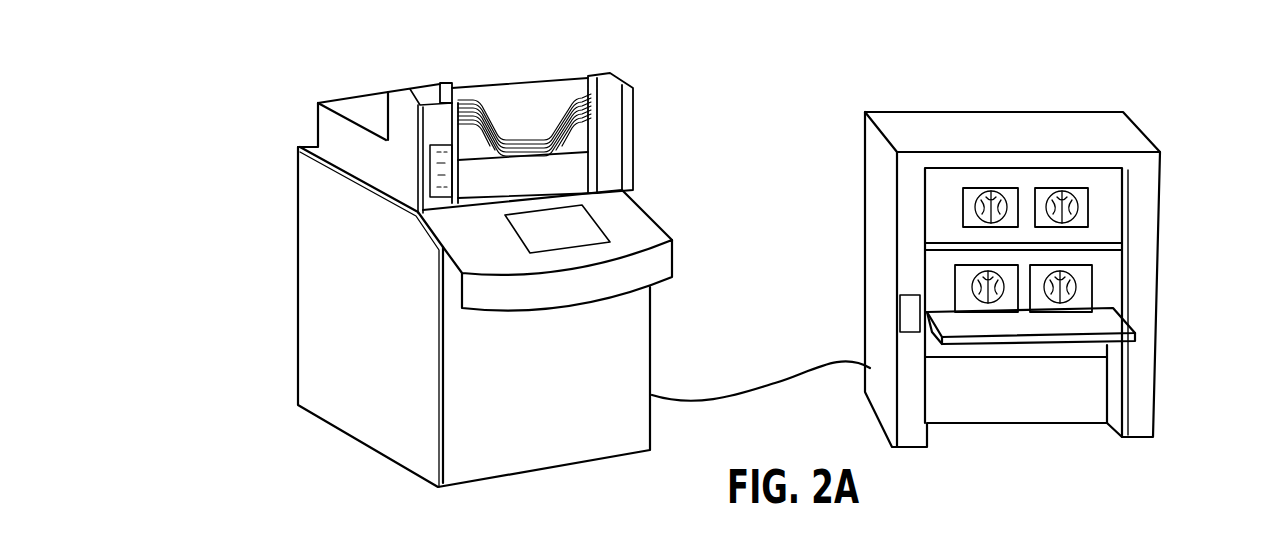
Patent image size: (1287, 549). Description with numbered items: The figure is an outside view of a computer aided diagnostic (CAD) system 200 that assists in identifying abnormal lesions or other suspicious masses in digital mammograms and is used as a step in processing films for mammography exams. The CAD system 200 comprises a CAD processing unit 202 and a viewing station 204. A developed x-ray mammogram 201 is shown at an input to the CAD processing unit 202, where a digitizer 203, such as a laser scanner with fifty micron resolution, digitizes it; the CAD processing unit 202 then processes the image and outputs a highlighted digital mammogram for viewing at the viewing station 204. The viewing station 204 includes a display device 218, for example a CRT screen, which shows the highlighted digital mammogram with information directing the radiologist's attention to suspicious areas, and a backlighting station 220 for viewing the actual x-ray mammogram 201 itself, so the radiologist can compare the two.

The computer aided diagnostic (CAD) system 200 is at (789, 283).
The x-ray mammogram 201 is at (517, 125).
The CAD processing unit 202 is at (316, 292).
The digitizer 203 is at (1146, 548).
The viewing station 204 is at (1015, 267).
The display device 218 is at (1108, 287).
The backlighting station 220 is at (1110, 207).